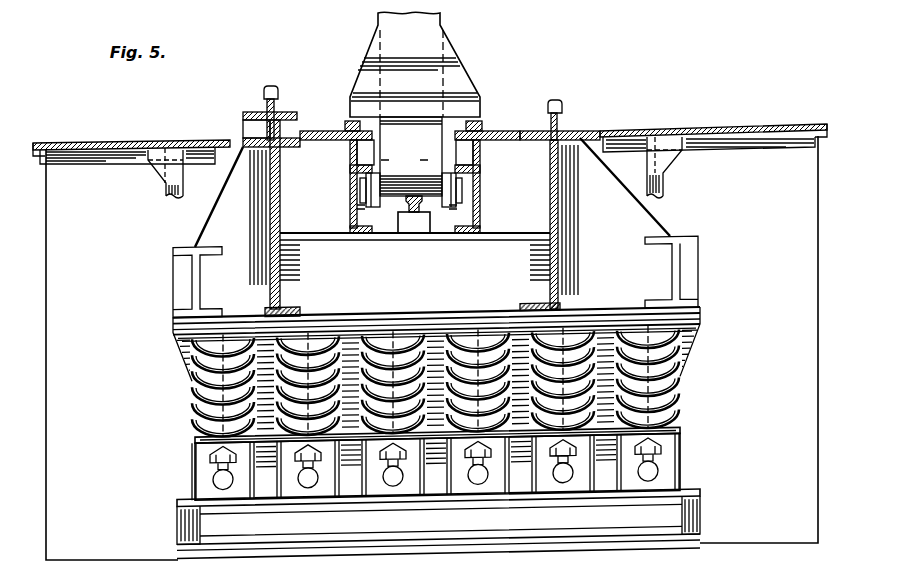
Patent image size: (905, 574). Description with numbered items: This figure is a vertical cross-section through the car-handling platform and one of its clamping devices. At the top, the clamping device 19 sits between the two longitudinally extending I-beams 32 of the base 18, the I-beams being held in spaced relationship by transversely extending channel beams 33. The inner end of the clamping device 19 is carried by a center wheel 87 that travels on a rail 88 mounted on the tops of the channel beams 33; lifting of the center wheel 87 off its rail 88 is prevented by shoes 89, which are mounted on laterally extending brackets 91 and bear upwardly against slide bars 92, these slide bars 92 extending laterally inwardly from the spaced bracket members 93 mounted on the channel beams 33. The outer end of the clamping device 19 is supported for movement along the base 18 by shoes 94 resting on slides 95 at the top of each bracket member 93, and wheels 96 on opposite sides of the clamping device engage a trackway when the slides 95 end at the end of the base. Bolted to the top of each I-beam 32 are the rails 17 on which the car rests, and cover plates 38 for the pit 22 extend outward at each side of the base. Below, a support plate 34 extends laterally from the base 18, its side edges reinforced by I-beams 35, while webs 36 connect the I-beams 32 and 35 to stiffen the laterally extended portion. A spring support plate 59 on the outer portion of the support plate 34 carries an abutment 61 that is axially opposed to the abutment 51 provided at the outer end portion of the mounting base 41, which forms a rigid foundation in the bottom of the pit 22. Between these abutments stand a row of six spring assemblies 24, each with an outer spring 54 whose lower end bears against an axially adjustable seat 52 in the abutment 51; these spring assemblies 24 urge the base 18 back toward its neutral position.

The rails 17 is at (266, 97).
The base 18 is at (566, 192).
The clamping devices 19 is at (463, 54).
The pit 22 is at (776, 453).
The spring assemblies 24 is at (369, 337).
The I-beams 32 is at (269, 196).
The channel beams 33 is at (314, 240).
The support plate 34 is at (432, 318).
The I-beams 35 is at (192, 276).
The webs 36 is at (229, 177).
The cover plate 38 is at (150, 141).
The mounting base 41 is at (694, 516).
The abutments 51 is at (681, 454).
The adjustable seat 52 is at (196, 437).
The outer springs 54 is at (627, 340).
The spring support plate 59 is at (482, 320).
The abutments 61 is at (690, 338).
The center wheel 87 is at (408, 205).
The rail 88 is at (425, 222).
The shoes 89 is at (365, 189).
The brackets 91 is at (362, 202).
The slide bars 92 is at (350, 172).
The bracket members 93 is at (344, 233).
The shoes 94 is at (351, 120).
The slides 95 is at (346, 131).
The wheels 96 is at (357, 210).